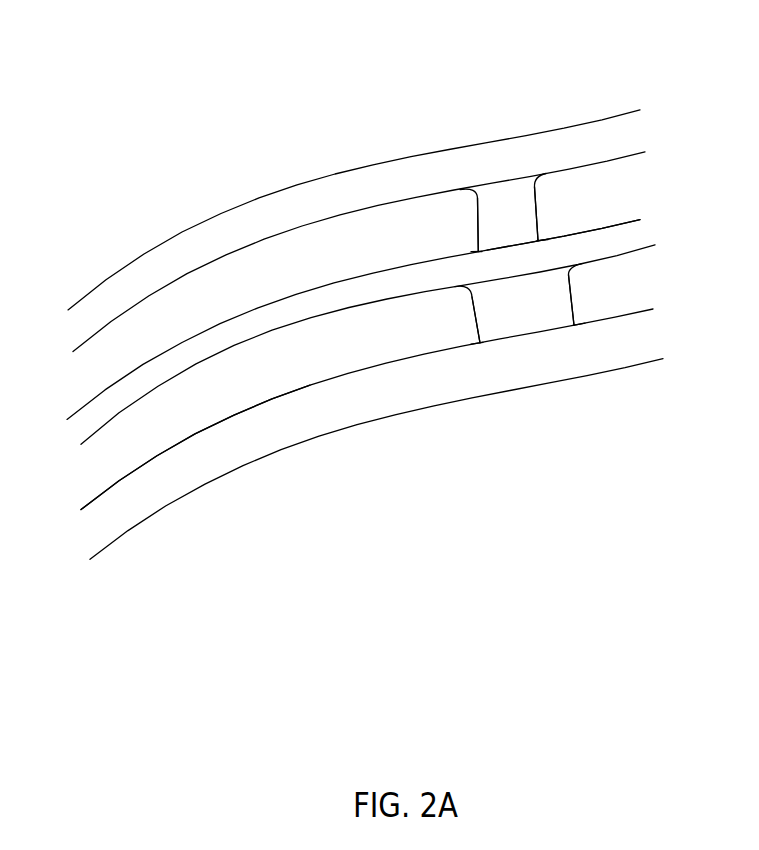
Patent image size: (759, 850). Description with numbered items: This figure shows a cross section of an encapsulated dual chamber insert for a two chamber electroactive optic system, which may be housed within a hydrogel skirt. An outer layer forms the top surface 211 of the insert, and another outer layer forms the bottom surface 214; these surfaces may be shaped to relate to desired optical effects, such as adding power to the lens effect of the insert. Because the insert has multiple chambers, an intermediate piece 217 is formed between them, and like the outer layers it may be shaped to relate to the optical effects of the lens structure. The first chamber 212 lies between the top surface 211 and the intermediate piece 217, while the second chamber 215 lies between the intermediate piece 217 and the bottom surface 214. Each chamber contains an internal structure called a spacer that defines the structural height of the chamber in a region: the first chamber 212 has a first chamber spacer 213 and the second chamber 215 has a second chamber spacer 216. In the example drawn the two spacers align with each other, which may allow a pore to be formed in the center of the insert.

The top surface 211 is at (334, 231).
The first chamber 212 is at (353, 237).
The first chamber spacer 213 is at (426, 133).
The bottom surface 214 is at (372, 493).
The second chamber 215 is at (367, 481).
The second chamber spacer 216 is at (575, 416).
The intermediate piece 217 is at (403, 232).